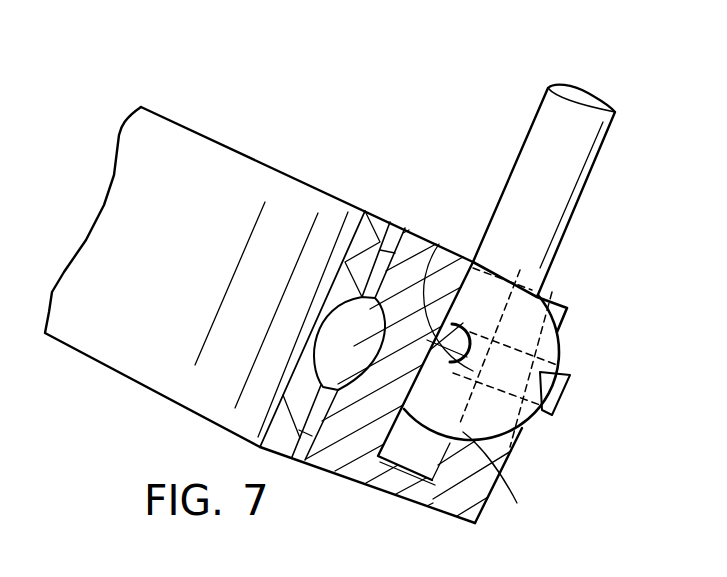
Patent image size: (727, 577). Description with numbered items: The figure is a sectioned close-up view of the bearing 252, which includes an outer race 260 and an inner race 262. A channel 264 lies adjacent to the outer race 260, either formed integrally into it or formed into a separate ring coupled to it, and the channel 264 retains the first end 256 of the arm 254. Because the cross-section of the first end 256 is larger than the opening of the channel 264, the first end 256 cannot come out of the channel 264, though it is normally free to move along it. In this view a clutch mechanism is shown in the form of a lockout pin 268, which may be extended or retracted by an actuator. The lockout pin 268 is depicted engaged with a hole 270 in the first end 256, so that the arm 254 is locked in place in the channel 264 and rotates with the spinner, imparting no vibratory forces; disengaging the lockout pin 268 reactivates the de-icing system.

The bearing 252 is at (88, 73).
The arm 254 is at (590, 178).
The first end 256 is at (537, 323).
The outer race 260 is at (347, 450).
The inner race 262 is at (143, 357).
The channel 264 is at (445, 458).
The lockout pin 268 is at (492, 442).
The hole 270 is at (447, 250).